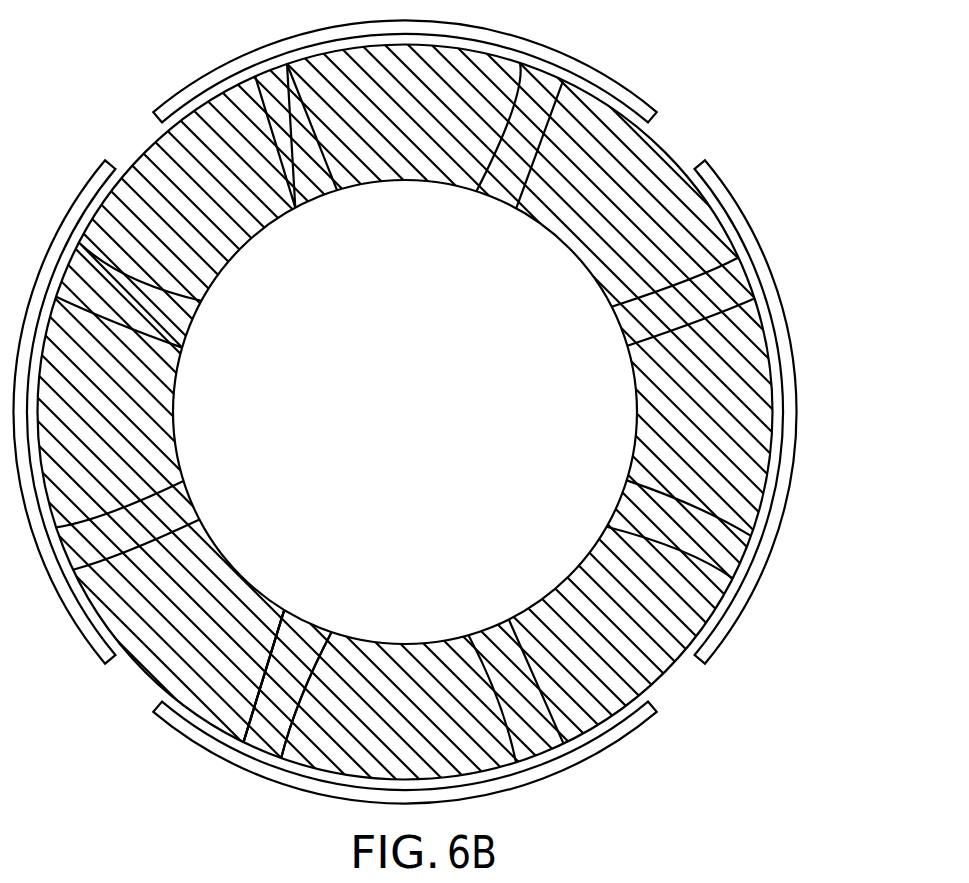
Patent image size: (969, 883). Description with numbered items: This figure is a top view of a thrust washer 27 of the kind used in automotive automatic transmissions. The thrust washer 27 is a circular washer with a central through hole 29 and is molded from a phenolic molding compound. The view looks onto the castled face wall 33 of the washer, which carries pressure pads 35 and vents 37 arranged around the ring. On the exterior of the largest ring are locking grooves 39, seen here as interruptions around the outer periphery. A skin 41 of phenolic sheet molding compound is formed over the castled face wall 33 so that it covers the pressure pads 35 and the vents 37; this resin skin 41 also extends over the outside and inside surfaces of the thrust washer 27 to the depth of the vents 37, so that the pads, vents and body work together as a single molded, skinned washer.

The thrust washer 27 is at (600, 756).
The central through hole 29 is at (418, 570).
The castled face wall 33 is at (218, 622).
The pressure pads 35 is at (225, 676).
The vents 37 is at (258, 724).
The locking grooves 39 is at (677, 675).
The skin 41 is at (418, 715).